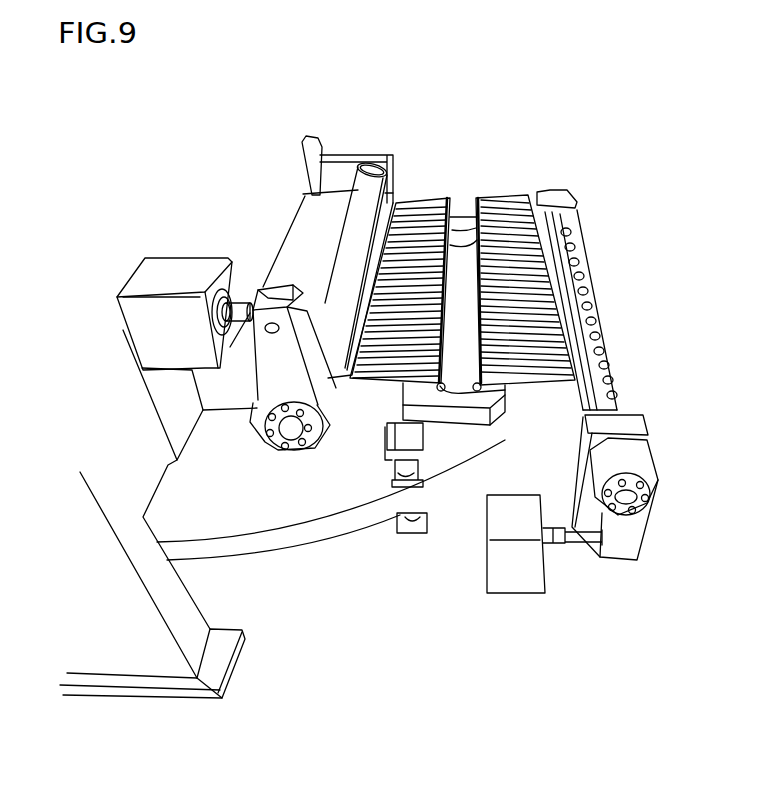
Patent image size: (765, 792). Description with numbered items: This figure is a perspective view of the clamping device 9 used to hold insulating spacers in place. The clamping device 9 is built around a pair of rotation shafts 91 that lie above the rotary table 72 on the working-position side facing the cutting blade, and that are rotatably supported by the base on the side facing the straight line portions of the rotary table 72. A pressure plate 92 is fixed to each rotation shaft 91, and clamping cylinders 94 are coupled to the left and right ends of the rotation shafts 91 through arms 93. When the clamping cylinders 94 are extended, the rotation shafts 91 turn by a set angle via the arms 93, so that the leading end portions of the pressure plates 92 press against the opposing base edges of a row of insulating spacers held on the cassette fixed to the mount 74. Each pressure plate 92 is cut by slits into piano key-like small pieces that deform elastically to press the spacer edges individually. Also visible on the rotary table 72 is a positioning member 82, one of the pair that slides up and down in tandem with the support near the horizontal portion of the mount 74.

The clamping device 9 is at (523, 180).
The rotary table 72 is at (295, 522).
The mount 74 is at (452, 413).
The positioning member 82 is at (385, 478).
The rotation shaft 91 is at (352, 232).
The pressure plate 92 is at (418, 198).
The arm 93 is at (287, 358).
The clamping cylinder 94 is at (158, 263).